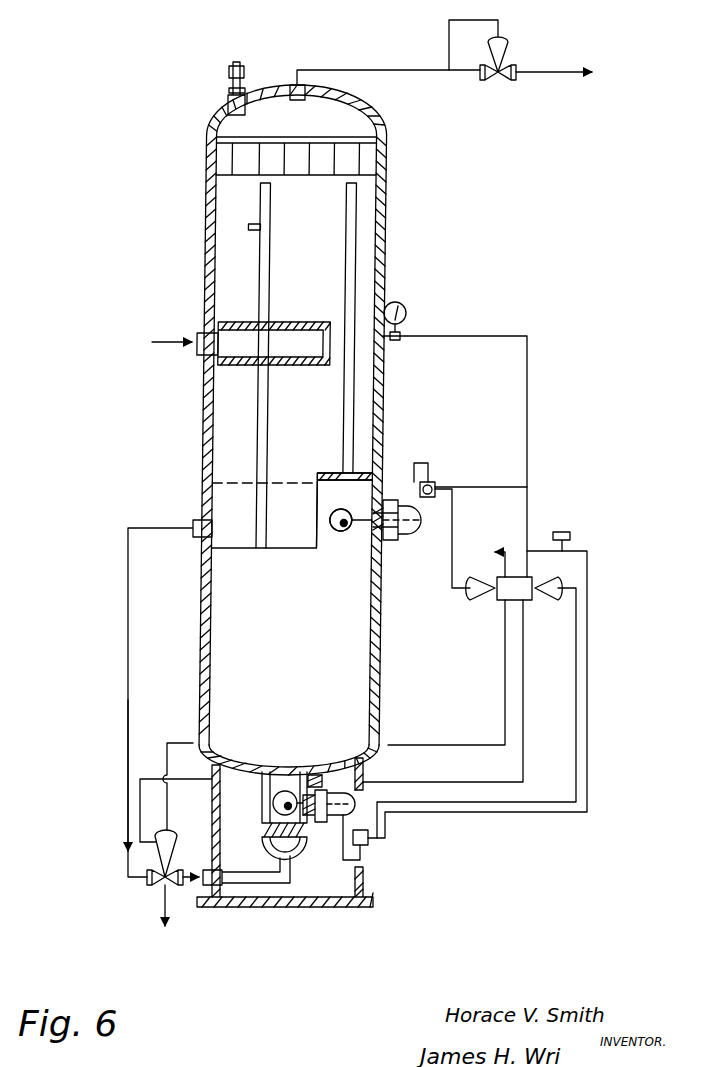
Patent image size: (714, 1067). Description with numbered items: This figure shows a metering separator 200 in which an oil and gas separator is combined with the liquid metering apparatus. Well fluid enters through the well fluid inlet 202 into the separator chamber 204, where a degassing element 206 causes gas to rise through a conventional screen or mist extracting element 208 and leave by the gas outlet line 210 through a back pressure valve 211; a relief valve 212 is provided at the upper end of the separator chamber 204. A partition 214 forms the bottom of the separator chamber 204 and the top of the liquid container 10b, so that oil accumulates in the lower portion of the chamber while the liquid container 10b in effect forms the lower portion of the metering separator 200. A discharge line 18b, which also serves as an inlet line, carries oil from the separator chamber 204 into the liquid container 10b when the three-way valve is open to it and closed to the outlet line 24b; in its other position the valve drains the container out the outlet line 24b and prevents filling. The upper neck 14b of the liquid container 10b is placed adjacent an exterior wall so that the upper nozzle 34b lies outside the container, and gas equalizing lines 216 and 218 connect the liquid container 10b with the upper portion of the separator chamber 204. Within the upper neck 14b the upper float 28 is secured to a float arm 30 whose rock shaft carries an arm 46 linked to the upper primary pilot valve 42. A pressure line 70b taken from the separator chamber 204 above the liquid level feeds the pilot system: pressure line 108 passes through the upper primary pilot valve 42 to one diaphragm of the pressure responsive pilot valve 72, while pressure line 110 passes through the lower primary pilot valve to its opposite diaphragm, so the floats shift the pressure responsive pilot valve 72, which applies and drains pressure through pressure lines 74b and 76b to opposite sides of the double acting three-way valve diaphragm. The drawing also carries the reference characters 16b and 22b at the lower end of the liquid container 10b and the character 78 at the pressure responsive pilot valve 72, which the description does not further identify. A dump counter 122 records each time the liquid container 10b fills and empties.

The metering separator 200 is at (391, 250).
The well fluid inlet 202 is at (200, 338).
The separator chamber 204 is at (388, 181).
The degassing element 206 is at (299, 322).
The mist extracting element 208 is at (378, 156).
The gas outlet line 210 is at (345, 70).
The back pressure valve 211 is at (508, 70).
The relief valve 212 is at (228, 64).
The partition 214 is at (322, 473).
The gas equalizing line 216 is at (272, 198).
The gas equalizing line 218 is at (347, 226).
The liquid container 10b is at (391, 657).
The upper neck 14b is at (381, 478).
The bottom outlet 16b is at (267, 783).
The discharge line 18b is at (127, 600).
The drain connection 22b is at (275, 868).
The outlet line 24b is at (166, 921).
The upper float 28 is at (338, 518).
The float arm 30 is at (353, 531).
The upper nozzle 34b is at (392, 541).
The upper primary pilot valve 42 is at (434, 483).
The arm 46 is at (427, 463).
The pressure line 70b is at (530, 372).
The pressure responsive pilot valve 72 is at (496, 598).
The pressure line 74b is at (525, 705).
The pressure line 76b is at (505, 672).
The actuating pressure 78 is at (485, 560).
The pressure line 108 is at (498, 486).
The pressure line 110 is at (588, 604).
The dump counter 122 is at (565, 531).